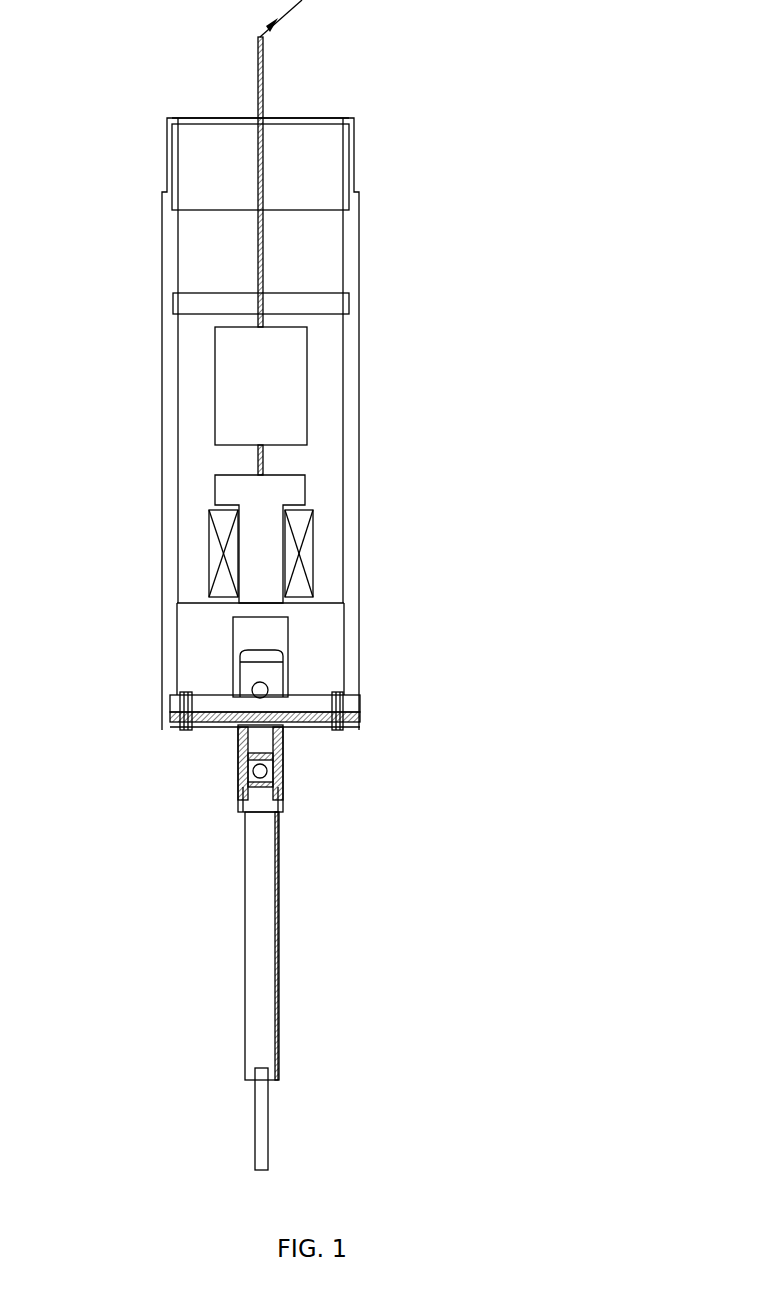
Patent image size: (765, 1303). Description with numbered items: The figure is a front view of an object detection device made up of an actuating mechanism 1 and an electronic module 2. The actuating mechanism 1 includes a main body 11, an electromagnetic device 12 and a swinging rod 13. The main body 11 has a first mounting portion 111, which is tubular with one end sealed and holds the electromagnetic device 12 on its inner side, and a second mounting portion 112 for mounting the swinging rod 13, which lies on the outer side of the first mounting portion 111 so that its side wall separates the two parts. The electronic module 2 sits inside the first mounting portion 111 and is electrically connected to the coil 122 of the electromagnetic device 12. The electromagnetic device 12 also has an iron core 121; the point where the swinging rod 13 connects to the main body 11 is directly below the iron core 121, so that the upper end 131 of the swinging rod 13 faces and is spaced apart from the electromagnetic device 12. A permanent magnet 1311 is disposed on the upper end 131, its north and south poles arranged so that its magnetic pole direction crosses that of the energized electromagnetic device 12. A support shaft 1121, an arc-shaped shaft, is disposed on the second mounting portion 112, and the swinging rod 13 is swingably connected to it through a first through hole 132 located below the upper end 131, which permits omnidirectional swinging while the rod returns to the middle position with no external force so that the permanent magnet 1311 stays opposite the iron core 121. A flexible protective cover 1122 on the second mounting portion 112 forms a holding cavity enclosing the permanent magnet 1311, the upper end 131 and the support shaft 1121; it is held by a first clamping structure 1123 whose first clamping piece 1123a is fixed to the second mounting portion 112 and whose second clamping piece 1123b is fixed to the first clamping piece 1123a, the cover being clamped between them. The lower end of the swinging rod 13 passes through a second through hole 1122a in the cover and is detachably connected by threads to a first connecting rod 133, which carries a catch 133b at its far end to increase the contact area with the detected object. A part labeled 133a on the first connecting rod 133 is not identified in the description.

The actuating mechanism 1 is at (308, 585).
The main body 11 is at (308, 496).
The first mounting portion 111 is at (187, 403).
The second mounting portion 112 is at (190, 682).
The support shaft 1121 is at (243, 722).
The flexible protective cover 1122 is at (205, 793).
The second through hole 1122a is at (262, 720).
The first clamping structure 1123 is at (314, 757).
The first clamping piece 1123a is at (340, 697).
The second clamping piece 1123b is at (345, 722).
The electromagnetic device 12 is at (249, 518).
The iron core 121 is at (237, 493).
The coil 122 is at (223, 552).
The swinging rod 13 is at (253, 870).
The upper end 131 is at (290, 630).
The permanent magnet 1311 is at (238, 640).
The first through hole 132 is at (262, 690).
The first connecting rod 133 is at (346, 947).
The bearing seat 133a is at (283, 785).
The catch 133b is at (262, 1133).
The electronic module 2 is at (295, 402).